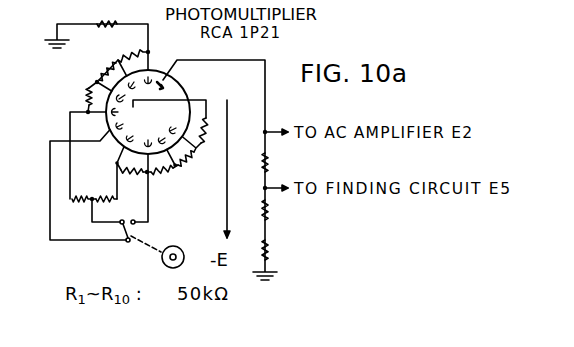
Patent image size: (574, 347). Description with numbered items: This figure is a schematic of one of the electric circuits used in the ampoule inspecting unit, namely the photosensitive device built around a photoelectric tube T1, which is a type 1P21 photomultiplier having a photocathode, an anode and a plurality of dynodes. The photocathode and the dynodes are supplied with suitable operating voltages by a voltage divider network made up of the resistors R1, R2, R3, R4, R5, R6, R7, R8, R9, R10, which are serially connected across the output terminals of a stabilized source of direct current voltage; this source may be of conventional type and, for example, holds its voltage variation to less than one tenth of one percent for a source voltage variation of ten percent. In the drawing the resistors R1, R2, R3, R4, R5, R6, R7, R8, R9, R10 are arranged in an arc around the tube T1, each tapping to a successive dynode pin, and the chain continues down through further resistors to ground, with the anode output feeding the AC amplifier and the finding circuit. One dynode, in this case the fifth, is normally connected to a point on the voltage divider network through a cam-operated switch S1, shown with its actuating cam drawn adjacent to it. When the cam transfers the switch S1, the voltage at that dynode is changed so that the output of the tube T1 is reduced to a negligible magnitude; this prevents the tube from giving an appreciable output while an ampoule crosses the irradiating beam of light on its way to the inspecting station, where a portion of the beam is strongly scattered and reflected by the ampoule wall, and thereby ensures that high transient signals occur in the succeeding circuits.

The resistor R1 is at (213, 131).
The resistor R2 is at (192, 167).
The resistor R3 is at (163, 181).
The resistor R4 is at (132, 183).
The resistor R5 is at (104, 188).
The resistor R6 is at (78, 212).
The resistor R7 is at (76, 97).
The resistor R8 is at (101, 66).
The resistor R9 is at (133, 49).
The resistor R10 is at (110, 14).
The cam-operated switch S1 is at (138, 233).
The photoelectric tube T1 is at (157, 112).